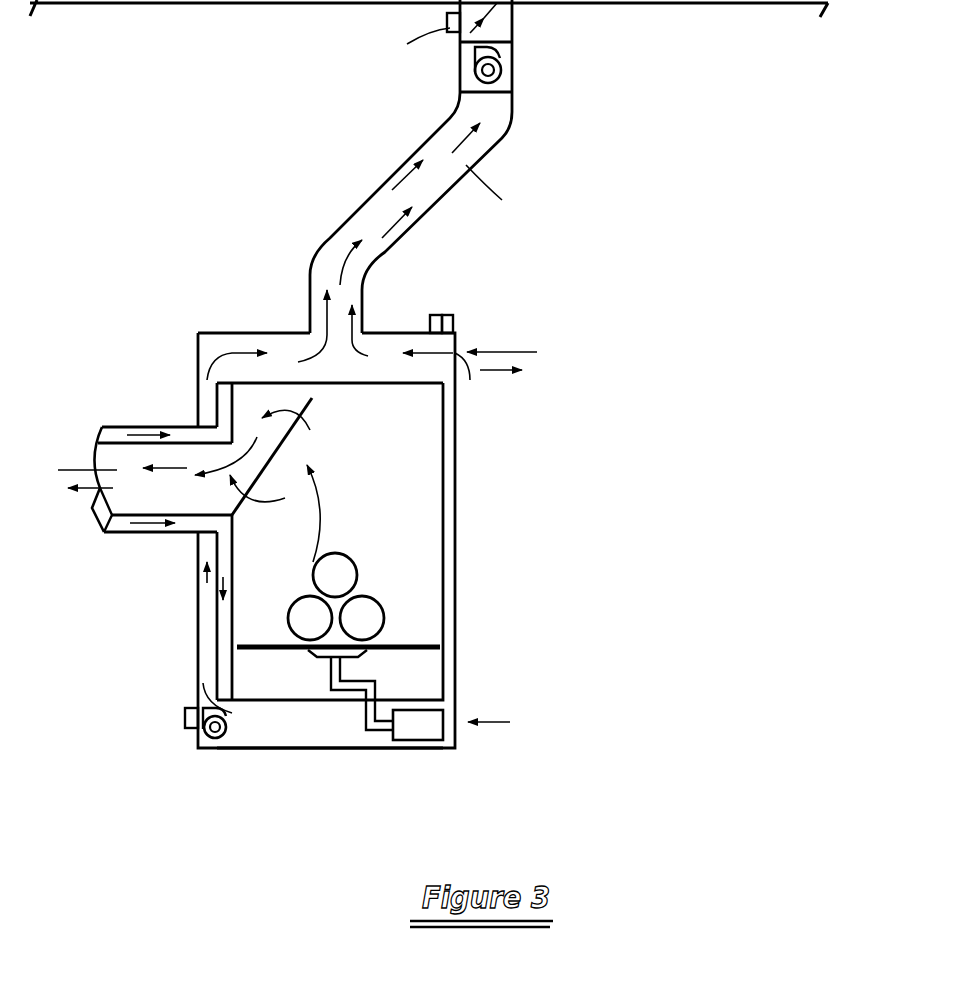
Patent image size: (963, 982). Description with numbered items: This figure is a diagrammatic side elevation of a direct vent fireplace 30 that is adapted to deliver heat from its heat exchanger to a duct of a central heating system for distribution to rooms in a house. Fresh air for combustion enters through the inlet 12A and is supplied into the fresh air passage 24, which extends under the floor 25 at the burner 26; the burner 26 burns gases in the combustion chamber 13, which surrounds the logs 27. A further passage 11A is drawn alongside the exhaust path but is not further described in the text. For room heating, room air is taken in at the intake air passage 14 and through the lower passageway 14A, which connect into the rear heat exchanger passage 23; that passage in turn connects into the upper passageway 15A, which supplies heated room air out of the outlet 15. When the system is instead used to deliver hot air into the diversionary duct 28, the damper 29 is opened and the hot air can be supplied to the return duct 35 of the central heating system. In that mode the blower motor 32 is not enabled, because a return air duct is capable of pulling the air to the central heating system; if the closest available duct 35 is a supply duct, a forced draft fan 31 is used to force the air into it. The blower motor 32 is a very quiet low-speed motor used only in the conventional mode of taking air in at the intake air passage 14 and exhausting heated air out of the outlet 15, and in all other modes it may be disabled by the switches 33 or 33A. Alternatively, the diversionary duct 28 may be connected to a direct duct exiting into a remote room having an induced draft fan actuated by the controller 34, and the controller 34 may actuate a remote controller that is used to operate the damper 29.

The return duct 35 is at (253, 0).
The diversionary duct 28 is at (383, 182).
The damper 29 is at (508, 17).
The forced draft fan 31 is at (500, 72).
The direct vent fireplace 30 is at (208, 312).
The upper passageway 15A is at (267, 335).
The outlet 15 is at (455, 345).
The switch 33 is at (440, 313).
The controller 34 is at (457, 315).
The inlet 12A is at (118, 426).
The exhaust duct lower passage 11A is at (181, 533).
The fresh air passage 24 is at (226, 610).
The rear heat exchanger passage 23 is at (207, 633).
The combustion chamber 13 is at (393, 488).
The logs 27 is at (370, 580).
The burner 26 is at (347, 643).
The floor 25 is at (423, 645).
The blower motor 32 is at (225, 732).
The switch 33A is at (185, 713).
The lower passageway 14A is at (310, 725).
The intake air passage 14 is at (455, 733).